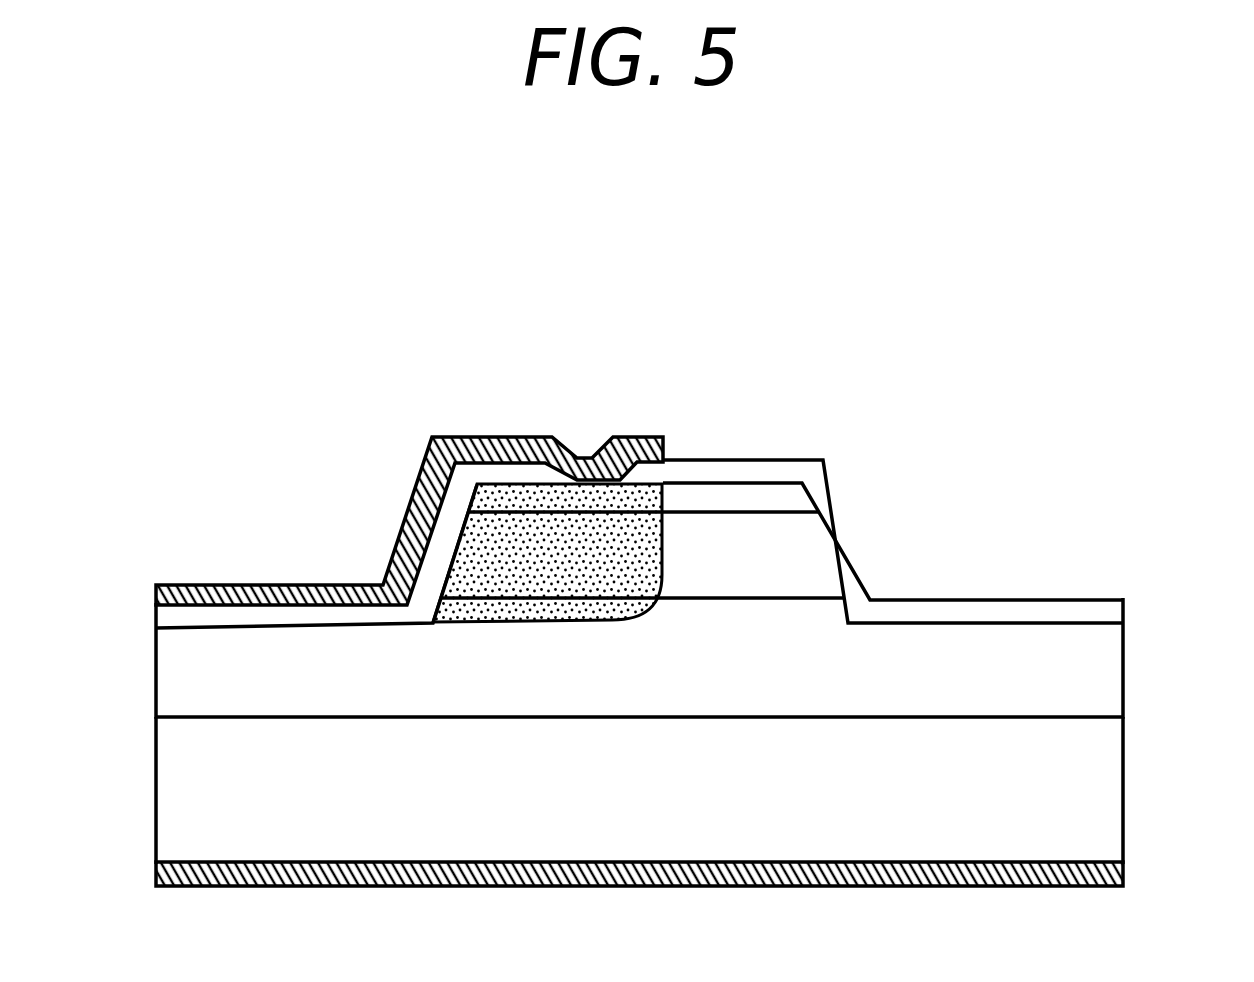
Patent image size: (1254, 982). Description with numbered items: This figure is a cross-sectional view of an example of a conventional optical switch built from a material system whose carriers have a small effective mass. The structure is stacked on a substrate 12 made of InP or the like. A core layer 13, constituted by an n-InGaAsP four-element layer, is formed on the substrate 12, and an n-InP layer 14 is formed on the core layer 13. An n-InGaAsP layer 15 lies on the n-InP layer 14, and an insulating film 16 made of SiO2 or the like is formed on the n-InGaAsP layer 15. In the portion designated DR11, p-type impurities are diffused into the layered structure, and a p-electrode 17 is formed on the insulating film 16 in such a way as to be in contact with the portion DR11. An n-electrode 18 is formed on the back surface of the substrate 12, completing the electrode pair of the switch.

The p-type impurity diffused portion DR11 is at (585, 530).
The substrate 12 is at (1123, 780).
The core layer 13 is at (1123, 668).
The n-InP layer 14 is at (797, 557).
The n-InGaAsP layer 15 is at (787, 498).
The insulating film 16 is at (755, 473).
The p-electrode 17 is at (257, 583).
The n-electrode 18 is at (1123, 870).